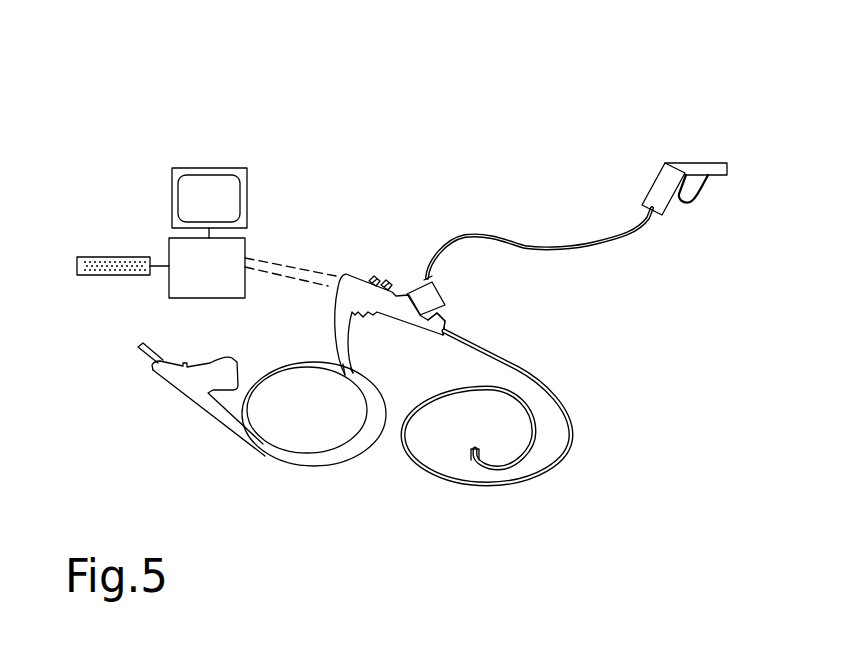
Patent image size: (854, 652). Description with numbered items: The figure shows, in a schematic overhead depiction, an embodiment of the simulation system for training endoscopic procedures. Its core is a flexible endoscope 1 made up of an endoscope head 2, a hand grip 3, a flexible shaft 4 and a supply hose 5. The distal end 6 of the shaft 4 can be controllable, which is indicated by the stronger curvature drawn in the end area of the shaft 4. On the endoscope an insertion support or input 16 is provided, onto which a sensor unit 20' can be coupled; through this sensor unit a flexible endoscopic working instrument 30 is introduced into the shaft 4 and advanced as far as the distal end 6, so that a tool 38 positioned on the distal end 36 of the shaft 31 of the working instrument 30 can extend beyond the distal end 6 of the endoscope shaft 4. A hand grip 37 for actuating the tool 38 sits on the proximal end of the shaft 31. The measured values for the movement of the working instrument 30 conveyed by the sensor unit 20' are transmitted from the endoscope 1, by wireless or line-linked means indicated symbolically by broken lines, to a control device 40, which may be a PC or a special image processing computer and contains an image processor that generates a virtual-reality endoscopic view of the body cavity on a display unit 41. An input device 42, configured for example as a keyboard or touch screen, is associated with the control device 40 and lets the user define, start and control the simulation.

The flexible endoscope 1 is at (657, 477).
The endoscope head 2 is at (365, 361).
The hand grip 3 is at (355, 275).
The flexible shaft 4 is at (487, 445).
The supply hose 5 is at (332, 455).
The distal end 6 is at (470, 448).
The insertion support or input 16 is at (460, 321).
The sensor unit 20' is at (458, 241).
The flexible endoscopic working instrument 30 is at (575, 155).
The shaft of the working instrument 31 is at (548, 247).
The distal end of the shaft 36 is at (430, 275).
The hand grip 37 is at (670, 180).
The tool 38 is at (500, 242).
The control device 40 is at (183, 287).
The monitor 41 is at (242, 175).
The input device 42 is at (82, 257).